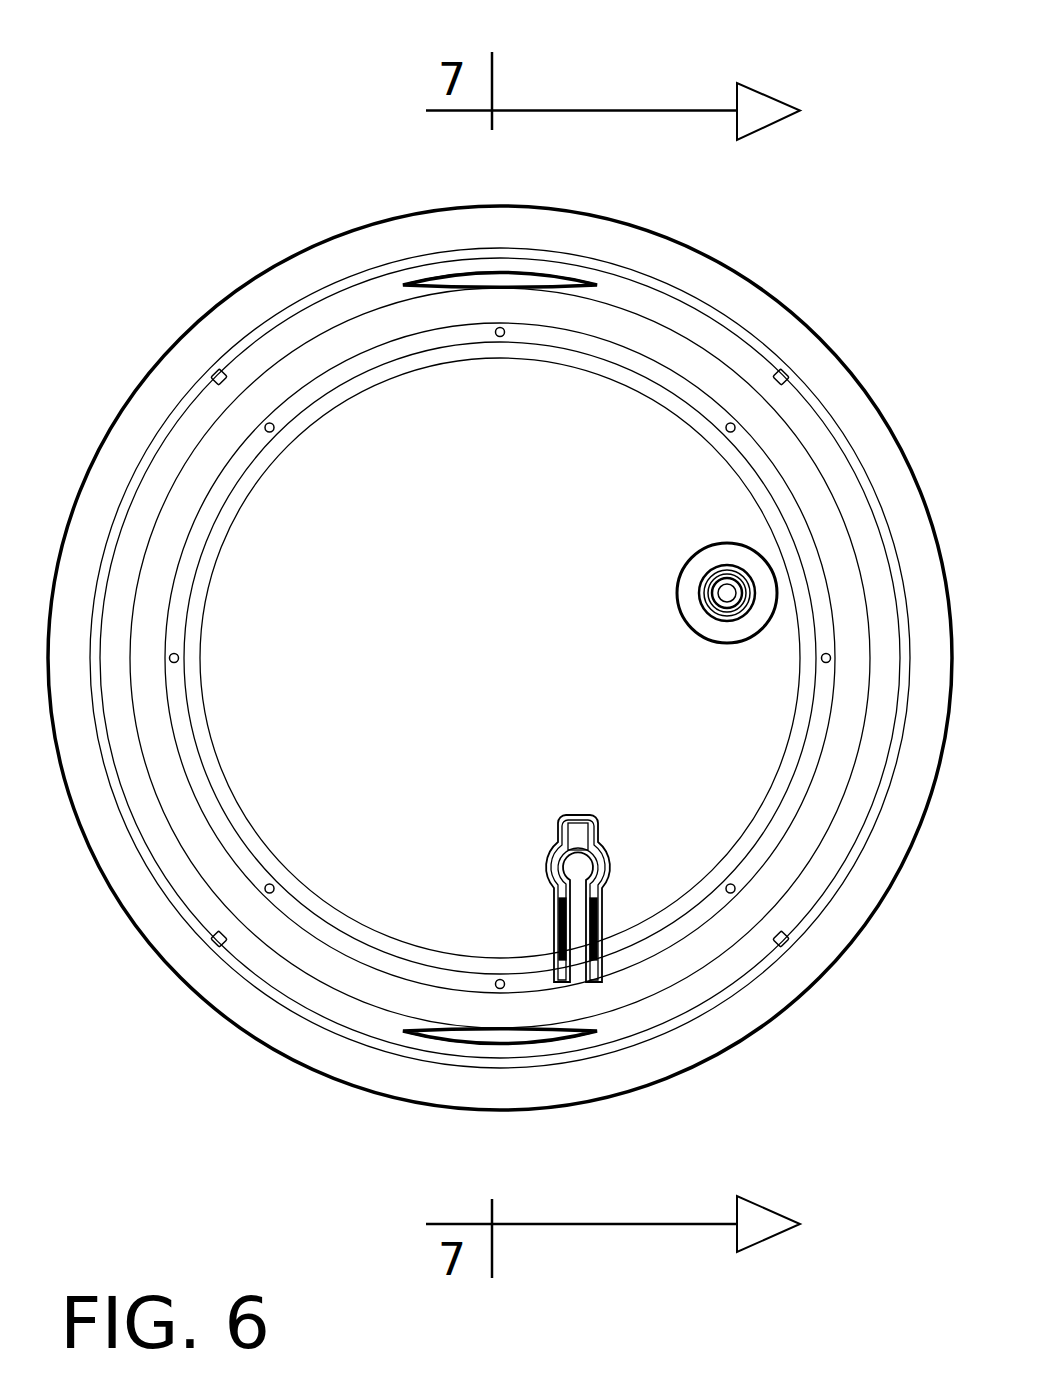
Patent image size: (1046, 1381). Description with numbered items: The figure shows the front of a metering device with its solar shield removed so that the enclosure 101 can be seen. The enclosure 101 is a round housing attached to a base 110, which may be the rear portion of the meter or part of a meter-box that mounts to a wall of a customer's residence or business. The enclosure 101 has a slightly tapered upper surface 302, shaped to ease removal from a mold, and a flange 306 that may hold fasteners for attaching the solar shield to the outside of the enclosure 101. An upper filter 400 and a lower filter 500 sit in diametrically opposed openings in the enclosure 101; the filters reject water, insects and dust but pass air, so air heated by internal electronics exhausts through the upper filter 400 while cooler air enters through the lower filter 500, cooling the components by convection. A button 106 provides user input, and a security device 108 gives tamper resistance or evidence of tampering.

The enclosure 101 is at (860, 70).
The base 110 is at (247, 280).
The upper surface 302 is at (645, 300).
The flange 306 is at (325, 967).
The upper filter 400 is at (470, 272).
The lower filter 500 is at (520, 1040).
The button 106 is at (745, 637).
The security device 108 is at (556, 814).